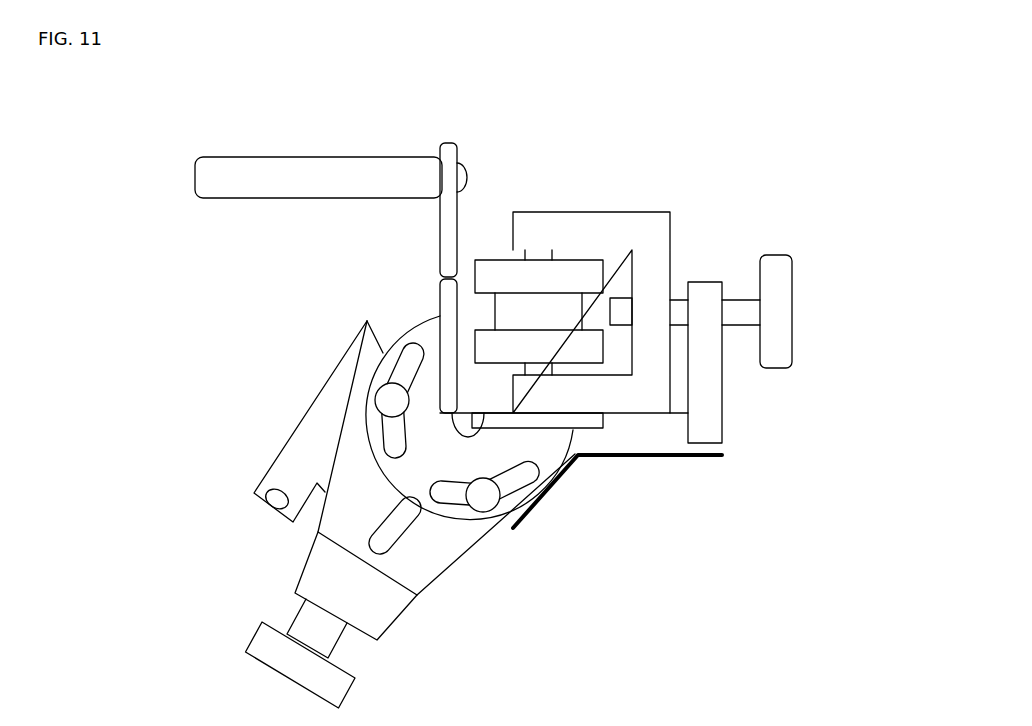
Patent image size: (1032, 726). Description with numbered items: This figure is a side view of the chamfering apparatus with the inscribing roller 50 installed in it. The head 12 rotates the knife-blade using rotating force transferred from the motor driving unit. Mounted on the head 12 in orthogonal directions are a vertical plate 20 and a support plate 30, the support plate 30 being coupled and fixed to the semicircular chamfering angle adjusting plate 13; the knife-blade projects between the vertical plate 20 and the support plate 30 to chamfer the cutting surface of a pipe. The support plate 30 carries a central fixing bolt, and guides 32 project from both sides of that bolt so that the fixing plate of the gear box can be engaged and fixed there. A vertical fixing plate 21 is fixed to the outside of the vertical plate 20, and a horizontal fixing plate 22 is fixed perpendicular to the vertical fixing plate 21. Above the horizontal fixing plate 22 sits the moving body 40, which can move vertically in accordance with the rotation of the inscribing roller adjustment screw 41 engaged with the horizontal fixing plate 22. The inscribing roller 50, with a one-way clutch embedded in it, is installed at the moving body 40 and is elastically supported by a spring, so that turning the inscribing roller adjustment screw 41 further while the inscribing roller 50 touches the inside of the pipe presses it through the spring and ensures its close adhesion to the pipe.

The head 12 is at (353, 462).
The semicircular chamfering angle adjusting plate 13 is at (445, 453).
The vertical plate 20 is at (545, 417).
The vertical fixing plate 21 is at (647, 430).
The horizontal fixing plate 22 is at (710, 410).
The support plate 30 is at (450, 230).
The guides 32 is at (210, 175).
The moving body 40 is at (645, 233).
The inscribing roller adjustment screw 41 is at (777, 313).
The inscribing roller 50 is at (565, 277).